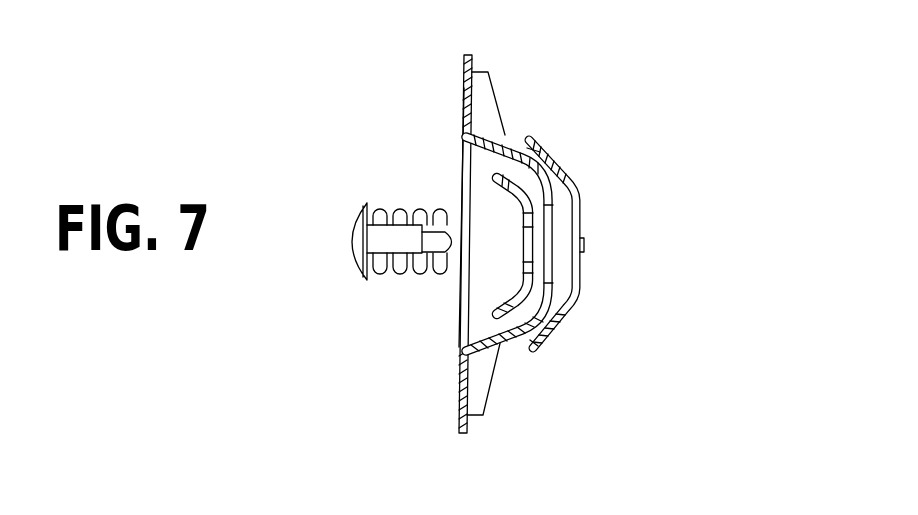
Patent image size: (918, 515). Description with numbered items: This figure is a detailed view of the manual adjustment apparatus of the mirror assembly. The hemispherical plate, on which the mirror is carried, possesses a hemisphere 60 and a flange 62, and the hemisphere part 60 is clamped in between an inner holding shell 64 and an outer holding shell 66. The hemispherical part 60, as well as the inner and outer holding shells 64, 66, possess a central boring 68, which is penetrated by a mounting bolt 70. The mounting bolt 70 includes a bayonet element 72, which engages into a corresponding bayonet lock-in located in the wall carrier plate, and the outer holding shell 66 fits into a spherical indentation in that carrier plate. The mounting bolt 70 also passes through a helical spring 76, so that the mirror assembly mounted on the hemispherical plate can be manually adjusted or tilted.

The hemisphere 60 is at (486, 145).
The flange 62 is at (463, 98).
The inner holding shell 64 is at (520, 205).
The outer holding shell 66 is at (567, 168).
The central boring 68 is at (596, 228).
The mounting bolt 70 is at (352, 259).
The bayonet element 72 is at (407, 252).
The helical spring 76 is at (394, 263).